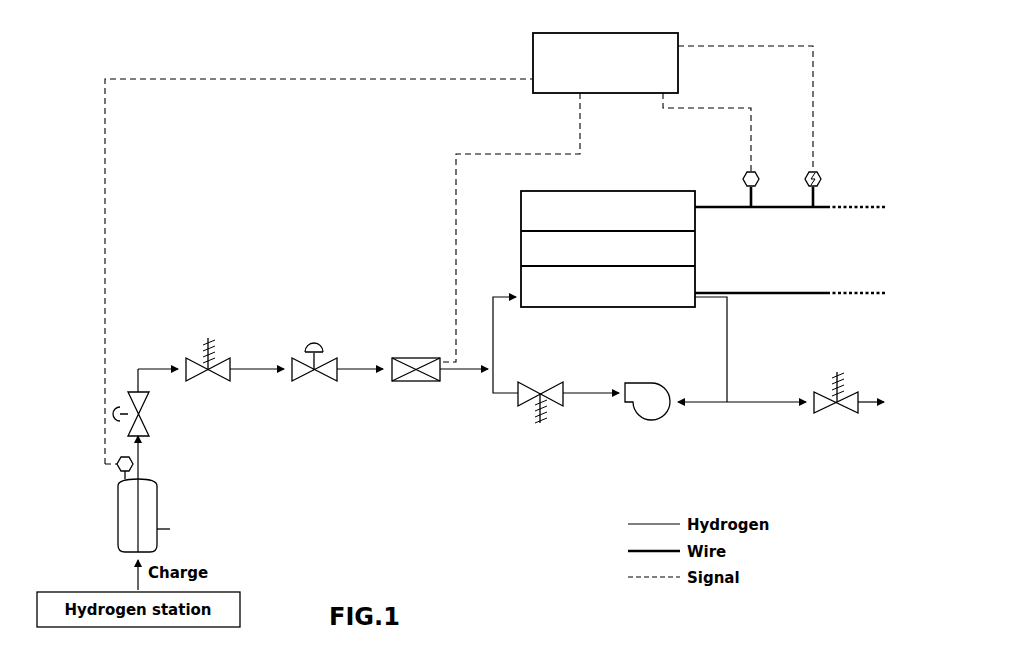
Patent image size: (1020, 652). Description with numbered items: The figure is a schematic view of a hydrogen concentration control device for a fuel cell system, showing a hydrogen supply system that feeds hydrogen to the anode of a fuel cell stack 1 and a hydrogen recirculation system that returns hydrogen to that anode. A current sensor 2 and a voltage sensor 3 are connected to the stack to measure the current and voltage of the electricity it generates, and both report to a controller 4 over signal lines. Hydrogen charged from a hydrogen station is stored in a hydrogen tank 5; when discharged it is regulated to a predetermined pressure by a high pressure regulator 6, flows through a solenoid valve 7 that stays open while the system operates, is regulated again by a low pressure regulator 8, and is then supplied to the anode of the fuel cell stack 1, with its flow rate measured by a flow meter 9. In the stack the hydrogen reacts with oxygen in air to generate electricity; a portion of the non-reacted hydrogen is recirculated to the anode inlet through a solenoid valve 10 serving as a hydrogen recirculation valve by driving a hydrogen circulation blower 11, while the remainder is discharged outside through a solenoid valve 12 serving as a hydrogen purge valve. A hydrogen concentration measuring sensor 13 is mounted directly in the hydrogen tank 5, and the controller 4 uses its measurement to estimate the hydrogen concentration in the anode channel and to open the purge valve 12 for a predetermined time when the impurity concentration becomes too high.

The fuel cell stack 1 is at (695, 250).
The current sensor 2 is at (757, 172).
The voltage sensor 3 is at (819, 173).
The controller 4 is at (533, 54).
The hydrogen tank 5 is at (170, 529).
The high pressure regulator 6 is at (149, 425).
The solenoid valve 7 is at (208, 381).
The low pressure regulator 8 is at (319, 381).
The flow meter 9 is at (418, 381).
The hydrogen recirculation valve 10 is at (524, 406).
The hydrogen circulation blower 11 is at (647, 420).
The hydrogen purge valve 12 is at (845, 413).
The hydrogen concentration measuring sensor 13 is at (117, 468).